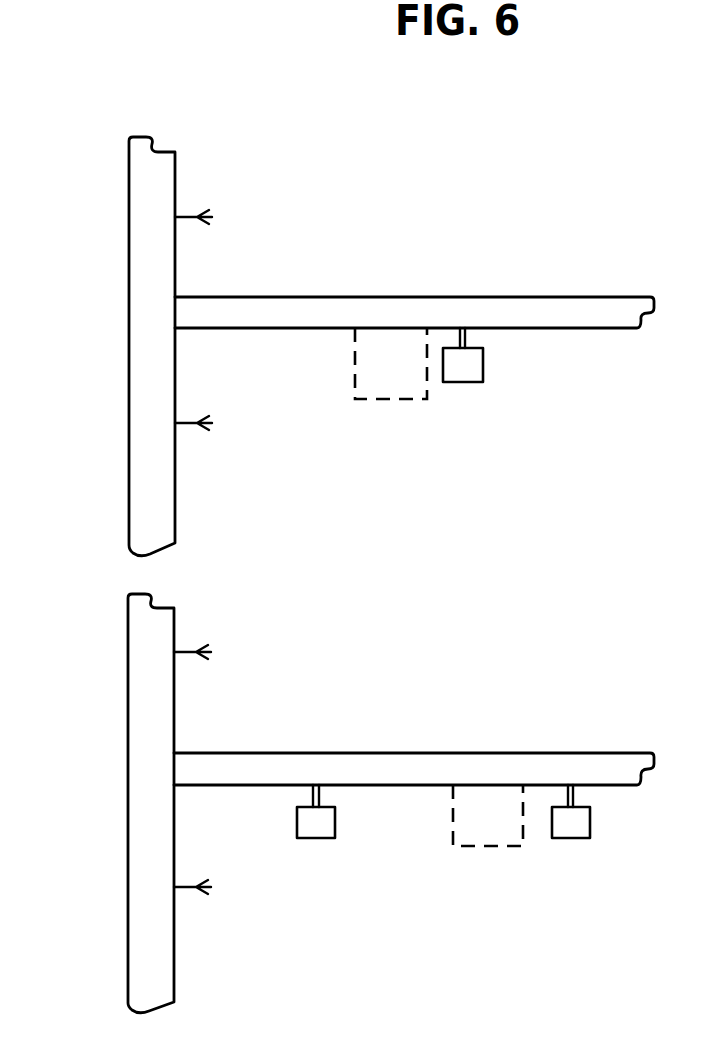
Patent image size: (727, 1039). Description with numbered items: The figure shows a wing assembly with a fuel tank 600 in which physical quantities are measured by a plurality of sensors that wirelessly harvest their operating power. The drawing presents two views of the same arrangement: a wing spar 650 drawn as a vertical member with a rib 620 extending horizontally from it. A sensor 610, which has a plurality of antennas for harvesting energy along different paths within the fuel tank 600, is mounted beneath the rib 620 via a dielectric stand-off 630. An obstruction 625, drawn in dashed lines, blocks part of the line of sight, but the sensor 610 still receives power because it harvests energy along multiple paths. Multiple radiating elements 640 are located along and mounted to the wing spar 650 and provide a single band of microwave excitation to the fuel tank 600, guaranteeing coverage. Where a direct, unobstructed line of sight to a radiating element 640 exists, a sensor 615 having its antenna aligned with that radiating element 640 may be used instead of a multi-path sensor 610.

The fuel tank 600 is at (346, 497).
The sensor 610 is at (467, 382).
The sensor 615 is at (323, 838).
The rib 620 is at (595, 297).
The obstruction 625 is at (390, 399).
The dielectric stand-off 630 is at (468, 340).
The radiating element 640 is at (192, 213).
The wing spar 650 is at (129, 197).